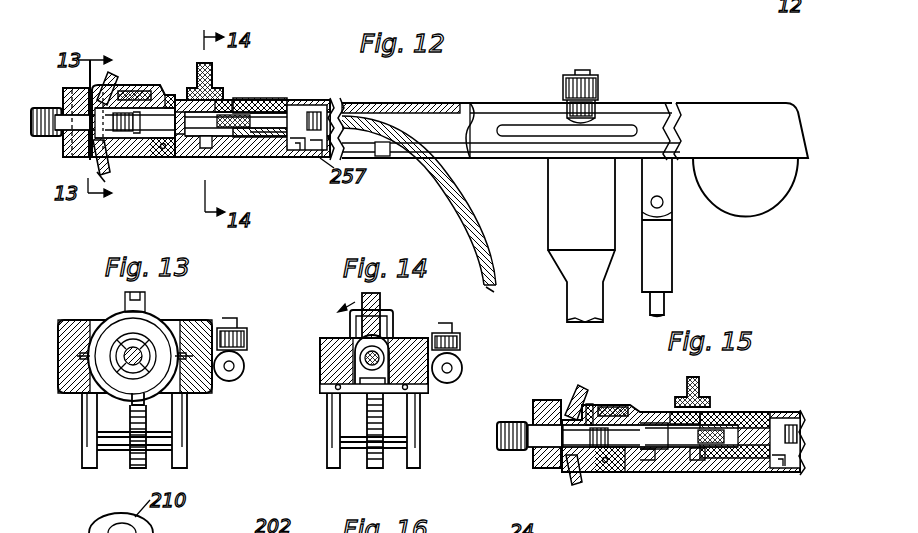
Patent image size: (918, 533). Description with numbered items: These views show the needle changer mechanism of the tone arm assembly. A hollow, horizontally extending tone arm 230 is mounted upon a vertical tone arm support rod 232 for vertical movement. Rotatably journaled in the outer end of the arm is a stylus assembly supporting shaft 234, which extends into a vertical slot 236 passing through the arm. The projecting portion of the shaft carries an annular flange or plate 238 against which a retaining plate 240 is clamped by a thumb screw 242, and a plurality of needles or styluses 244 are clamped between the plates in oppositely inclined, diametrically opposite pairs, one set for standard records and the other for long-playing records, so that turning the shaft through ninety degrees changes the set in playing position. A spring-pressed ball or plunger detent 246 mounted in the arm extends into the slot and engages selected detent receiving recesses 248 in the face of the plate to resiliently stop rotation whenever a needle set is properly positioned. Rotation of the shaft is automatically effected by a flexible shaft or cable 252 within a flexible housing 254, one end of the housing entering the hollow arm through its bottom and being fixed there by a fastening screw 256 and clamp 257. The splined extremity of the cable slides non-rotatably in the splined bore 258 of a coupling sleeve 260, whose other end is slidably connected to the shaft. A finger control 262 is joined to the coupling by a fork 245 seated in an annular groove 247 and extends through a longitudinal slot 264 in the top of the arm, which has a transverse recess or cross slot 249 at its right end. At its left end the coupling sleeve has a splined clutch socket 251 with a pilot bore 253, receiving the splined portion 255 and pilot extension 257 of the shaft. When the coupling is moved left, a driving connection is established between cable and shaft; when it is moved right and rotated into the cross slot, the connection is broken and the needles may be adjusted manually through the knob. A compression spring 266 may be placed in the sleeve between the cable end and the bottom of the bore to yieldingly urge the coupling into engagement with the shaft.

In FIG. 12, the tone arm 230 is at (452, 108).
In FIG. 14, the tone arm 230 is at (392, 338).
In FIG. 12, the tone arm support rod 232 is at (568, 313).
In FIG. 12, the stylus assembly supporting shaft 234 is at (153, 93).
In FIG. 15, the stylus assembly supporting shaft 234 is at (645, 405).
In FIG. 13, the vertical slot 236 is at (79, 328).
In FIG. 15, the annular flange or plate 238 is at (580, 470).
In FIG. 13, the retaining plate 240 is at (158, 344).
In FIG. 15, the retaining plate 240 is at (555, 470).
In FIG. 12, the thumb screw 242 is at (65, 126).
In FIG. 13, the thumb screw 242 is at (124, 366).
In FIG. 15, the thumb screw 242 is at (520, 440).
In FIG. 15, the needles or styluses 244 is at (582, 395).
In FIG. 14, the fork 245 is at (360, 375).
In FIG. 12, the spring-pressed ball or plunger detent 246 is at (128, 90).
In FIG. 15, the spring-pressed ball or plunger detent 246 is at (614, 402).
In FIG. 12, the annular groove 247 is at (197, 133).
In FIG. 14, the annular groove 247 is at (365, 383).
In FIG. 12, the detent receiving recesses 248 is at (104, 90).
In FIG. 15, the detent receiving recesses 248 is at (591, 406).
In FIG. 12, the transverse recess or cross slot 249 is at (240, 100).
In FIG. 15, the splined clutch socket 251 is at (674, 447).
In FIG. 12, the flexible shaft or cable 252 is at (277, 127).
In FIG. 15, the flexible shaft or cable 252 is at (758, 424).
In FIG. 15, the pilot bore 253 is at (699, 452).
In FIG. 12, the flexible housing 254 is at (466, 188).
In FIG. 12, the splined portion 255 is at (178, 108).
In FIG. 15, the splined portion 255 is at (630, 462).
In FIG. 12, the fastening screw 256 is at (297, 157).
In FIG. 12, the clamp / pilot extension 257 is at (177, 133).
In FIG. 15, the clamp / pilot extension 257 is at (656, 450).
In FIG. 12, the splined bore 258 is at (247, 128).
In FIG. 15, the splined bore 258 is at (770, 442).
In FIG. 12, the coupling sleeve 260 is at (220, 133).
In FIG. 14, the coupling sleeve 260 is at (358, 357).
In FIG. 12, the finger control 262 is at (216, 96).
In FIG. 14, the finger control 262 is at (382, 303).
In FIG. 15, the finger control 262 is at (702, 396).
In FIG. 12, the longitudinal slot 264 is at (222, 102).
In FIG. 14, the longitudinal slot 264 is at (353, 340).
In FIG. 15, the longitudinal slot 264 is at (672, 412).
In FIG. 15, the compression spring 266 is at (735, 430).